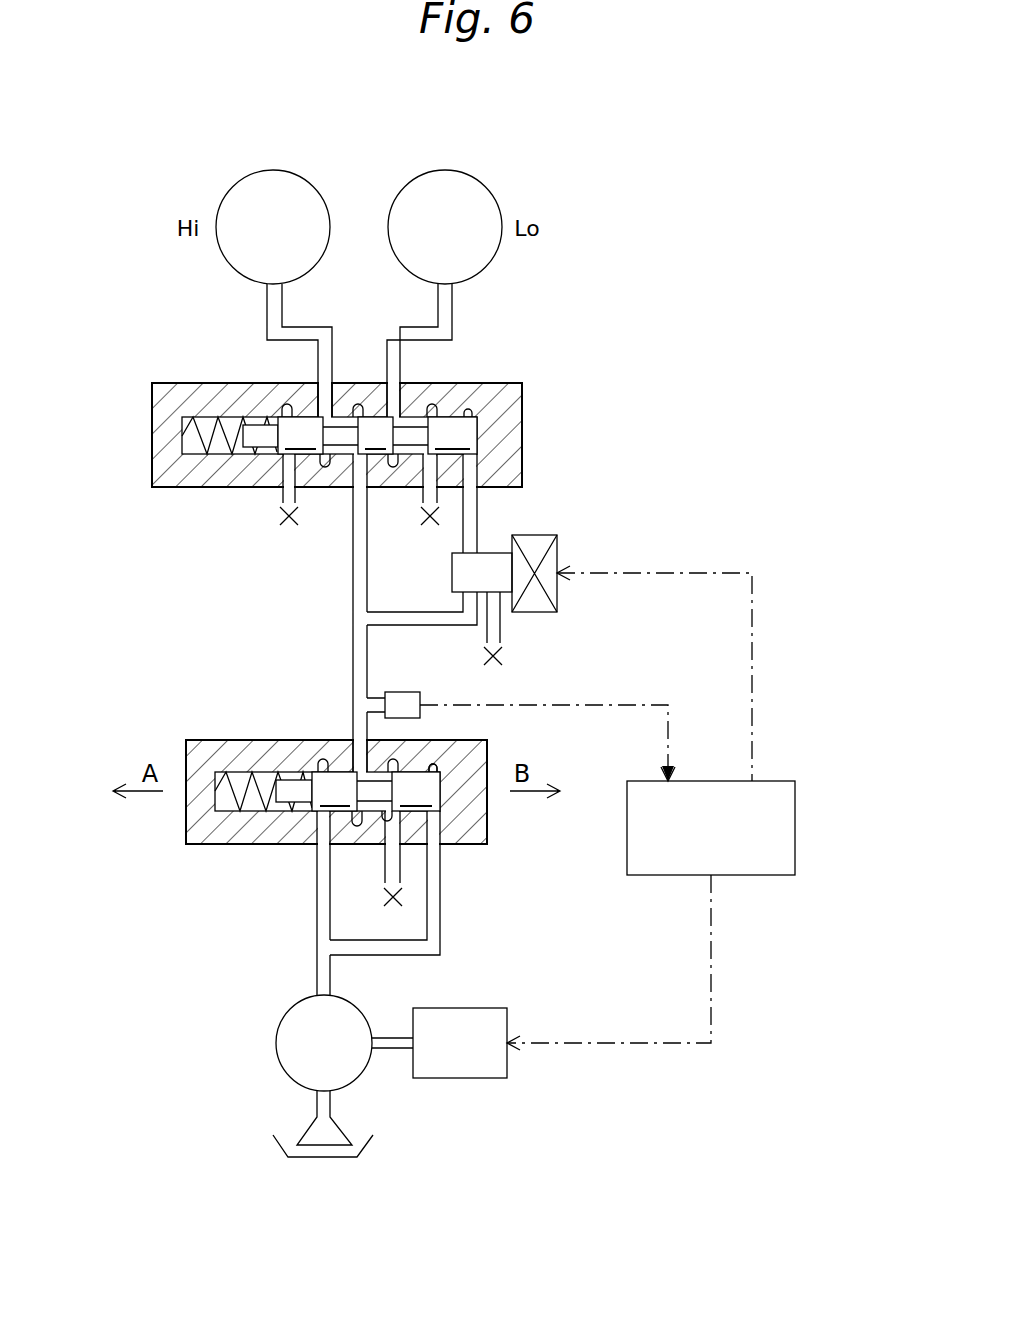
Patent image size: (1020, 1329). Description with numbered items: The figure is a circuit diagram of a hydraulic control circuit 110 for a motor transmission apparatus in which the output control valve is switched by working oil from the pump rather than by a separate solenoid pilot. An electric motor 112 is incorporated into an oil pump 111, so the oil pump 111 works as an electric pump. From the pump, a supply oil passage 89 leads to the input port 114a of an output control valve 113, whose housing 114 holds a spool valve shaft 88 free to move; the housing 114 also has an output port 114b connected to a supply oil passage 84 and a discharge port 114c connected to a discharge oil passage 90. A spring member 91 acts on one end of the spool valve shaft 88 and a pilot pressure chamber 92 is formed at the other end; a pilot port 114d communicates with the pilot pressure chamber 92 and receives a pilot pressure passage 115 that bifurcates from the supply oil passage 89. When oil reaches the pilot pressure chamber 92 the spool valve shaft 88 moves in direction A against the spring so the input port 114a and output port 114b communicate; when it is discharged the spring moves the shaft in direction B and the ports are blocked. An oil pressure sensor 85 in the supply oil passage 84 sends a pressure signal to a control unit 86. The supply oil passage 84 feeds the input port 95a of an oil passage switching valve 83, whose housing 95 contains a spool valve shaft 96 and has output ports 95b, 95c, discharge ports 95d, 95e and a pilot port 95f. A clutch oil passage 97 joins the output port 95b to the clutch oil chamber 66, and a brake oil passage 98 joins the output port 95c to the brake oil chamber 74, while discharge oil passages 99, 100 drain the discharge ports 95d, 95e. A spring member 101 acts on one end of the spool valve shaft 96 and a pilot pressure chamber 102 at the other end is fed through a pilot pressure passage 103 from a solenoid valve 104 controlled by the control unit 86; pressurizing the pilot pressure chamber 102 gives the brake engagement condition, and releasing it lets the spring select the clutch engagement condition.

The clutch oil chamber 66 is at (273, 227).
The brake oil chamber 74 is at (445, 227).
The oil passage switching valve 83 is at (532, 418).
The supply oil passage 84 is at (353, 642).
The oil pressure sensor 85 is at (405, 692).
The control unit 86 is at (771, 782).
The spool valve shaft 88 is at (430, 797).
The supply oil passage 89 is at (317, 963).
The discharge oil passage 90 is at (402, 868).
The spring member 91 is at (235, 790).
The pilot pressure chamber 92 is at (435, 762).
The housing 95 is at (346, 435).
The input port 95a is at (362, 473).
The output port 95b is at (320, 395).
The output port 95c is at (395, 395).
The discharge port 95d is at (283, 490).
The discharge port 95e is at (423, 487).
The pilot port 95f is at (477, 488).
The spool valve shaft 96 is at (455, 435).
The clutch oil passage 97 is at (267, 316).
The brake oil passage 98 is at (452, 316).
The discharge oil passage 99 is at (291, 480).
The discharge oil passage 100 is at (412, 512).
The spring member 101 is at (190, 430).
The pilot pressure chamber 102 is at (522, 390).
The pilot pressure passage 103 is at (478, 520).
The solenoid valve 104 is at (558, 595).
The hydraulic control circuit 110 is at (618, 258).
The oil pump 111 is at (276, 1043).
The electric motor 112 is at (508, 1072).
The output control valve 113 is at (182, 740).
The housing 114 is at (332, 826).
The input port 114a is at (325, 850).
The output port 114b is at (352, 748).
The discharge port 114c is at (385, 853).
The pilot port 114d is at (440, 835).
The pilot pressure passage 115 is at (440, 948).